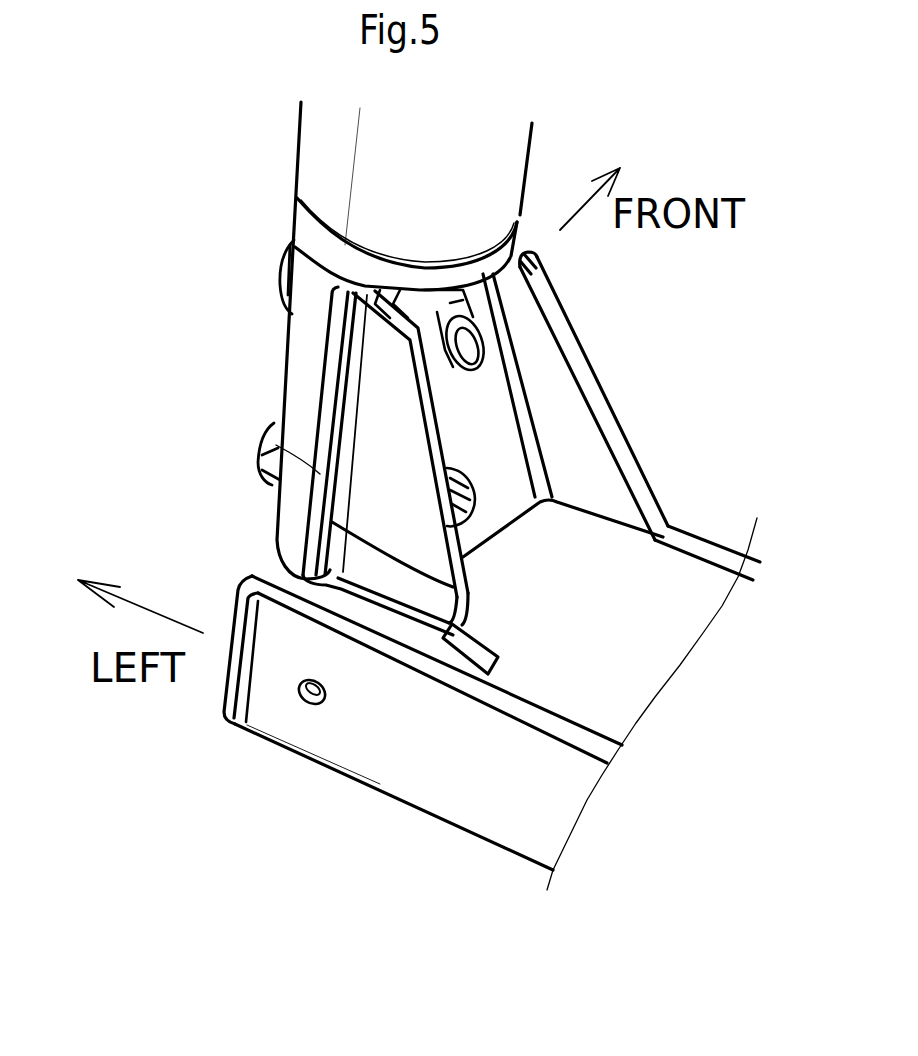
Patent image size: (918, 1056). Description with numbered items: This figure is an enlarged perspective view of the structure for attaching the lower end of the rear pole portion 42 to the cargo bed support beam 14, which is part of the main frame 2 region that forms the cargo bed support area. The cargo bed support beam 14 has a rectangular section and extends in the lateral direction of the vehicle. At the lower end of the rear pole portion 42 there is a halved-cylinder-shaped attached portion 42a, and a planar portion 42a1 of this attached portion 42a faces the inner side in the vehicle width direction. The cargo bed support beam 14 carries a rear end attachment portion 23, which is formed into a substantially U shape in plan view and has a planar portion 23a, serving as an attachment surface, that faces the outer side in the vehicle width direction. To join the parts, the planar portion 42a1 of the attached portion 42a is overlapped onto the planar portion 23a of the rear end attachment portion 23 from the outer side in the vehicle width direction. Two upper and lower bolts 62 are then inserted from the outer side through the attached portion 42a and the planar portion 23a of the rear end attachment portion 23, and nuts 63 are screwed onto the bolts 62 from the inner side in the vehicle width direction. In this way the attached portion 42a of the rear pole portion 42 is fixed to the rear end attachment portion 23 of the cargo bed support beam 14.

The rear pole portion 42 is at (318, 174).
The attached portion 42a is at (293, 433).
The planar portion 42a1 is at (313, 388).
The bolts 62 is at (284, 282).
The rear end attachment portion 23 is at (590, 425).
The planar portion 23a is at (338, 522).
The nuts 63 is at (430, 294).
The cargo bed support beam 14 is at (393, 738).
The main frame 2 is at (496, 704).